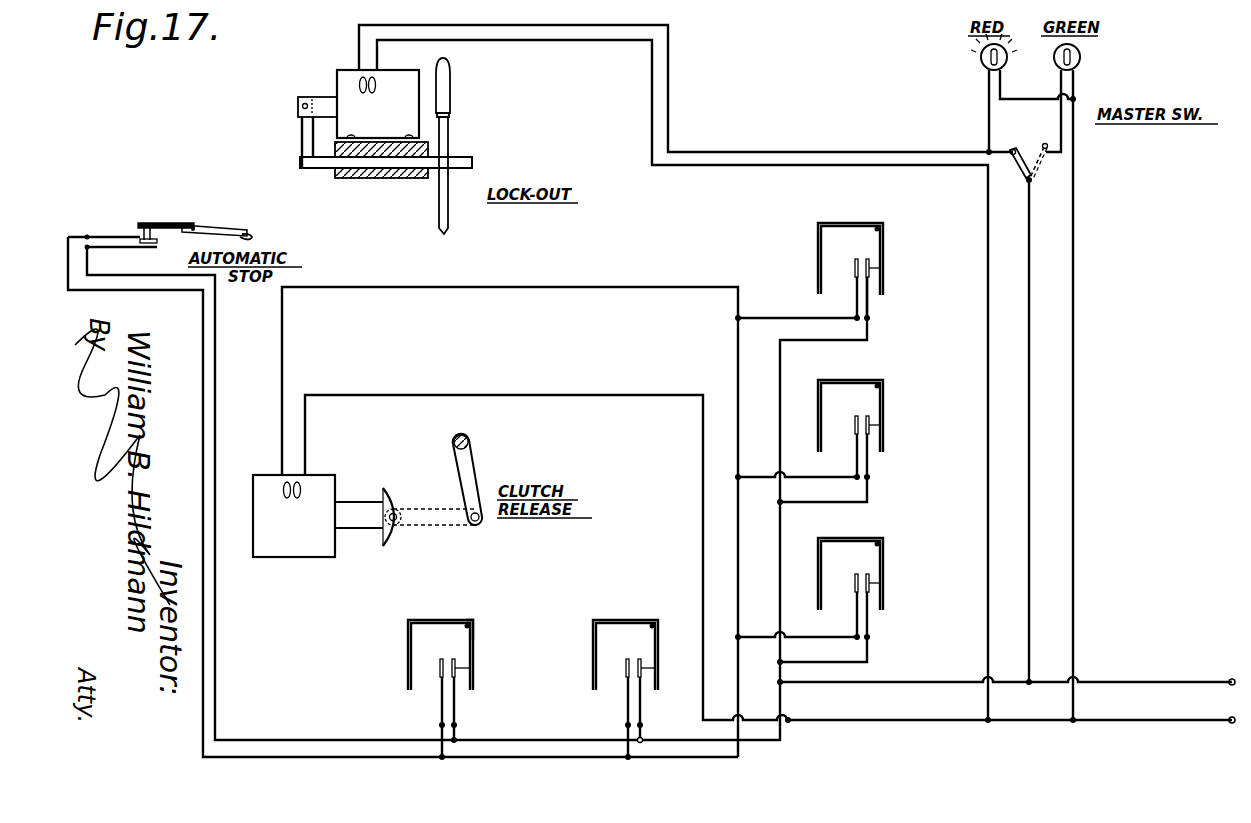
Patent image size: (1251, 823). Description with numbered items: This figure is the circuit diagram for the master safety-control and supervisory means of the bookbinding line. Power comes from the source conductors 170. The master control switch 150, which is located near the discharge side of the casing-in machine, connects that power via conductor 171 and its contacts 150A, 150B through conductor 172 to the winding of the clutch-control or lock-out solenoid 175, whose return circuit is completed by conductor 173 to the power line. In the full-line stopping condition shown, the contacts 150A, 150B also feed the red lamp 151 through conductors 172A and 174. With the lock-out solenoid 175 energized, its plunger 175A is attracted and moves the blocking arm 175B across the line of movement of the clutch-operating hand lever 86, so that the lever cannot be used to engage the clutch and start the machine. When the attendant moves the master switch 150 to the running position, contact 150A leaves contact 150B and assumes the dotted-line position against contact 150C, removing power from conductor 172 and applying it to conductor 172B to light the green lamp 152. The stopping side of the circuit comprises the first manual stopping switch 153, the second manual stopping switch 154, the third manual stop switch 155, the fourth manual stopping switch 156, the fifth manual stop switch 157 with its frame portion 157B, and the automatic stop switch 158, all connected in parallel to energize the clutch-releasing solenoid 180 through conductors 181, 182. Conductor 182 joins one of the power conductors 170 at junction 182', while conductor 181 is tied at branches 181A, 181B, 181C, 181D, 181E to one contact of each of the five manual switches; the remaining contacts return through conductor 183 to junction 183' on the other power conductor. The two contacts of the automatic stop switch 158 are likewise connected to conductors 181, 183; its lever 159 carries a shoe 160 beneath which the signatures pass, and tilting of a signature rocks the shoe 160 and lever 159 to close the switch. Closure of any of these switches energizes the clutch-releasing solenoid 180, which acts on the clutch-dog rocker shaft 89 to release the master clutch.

The clutch-operating hand lever 86 is at (452, 96).
The clutch-dog rocker shaft 89 is at (470, 442).
The master control switch 150 is at (1087, 130).
The master switch contact 150A is at (1036, 178).
The master switch contact 150B is at (1019, 148).
The master switch contact 150C is at (1053, 150).
The red lamp 151 is at (980, 58).
The green lamp 152 is at (1080, 60).
The first manual stopping switch 153 is at (866, 568).
The second manual stopping switch 154 is at (866, 410).
The third manual stop switch 155 is at (866, 254).
The fourth manual stopping switch 156 is at (641, 650).
The fifth manual stop switch 157 is at (456, 650).
The relay contactor frame 157B is at (475, 638).
The automatic stop switch 158 is at (115, 202).
The lever 159 is at (207, 230).
The shoe 160 is at (250, 240).
The source conductors 170 is at (833, 682).
The conductor 171 is at (1033, 383).
The conductor 172 is at (877, 152).
The conductor 172A is at (988, 102).
The conductor 172B is at (1045, 96).
The conductor 173 is at (665, 165).
The conductor 174 is at (1073, 240).
The lock-out solenoid 175 is at (390, 124).
The plunger 175A is at (298, 106).
The blocking arm 175B is at (458, 159).
The clutch-releasing solenoid 180 is at (312, 544).
The conductor 181 is at (548, 288).
The conductor connection 181A is at (735, 635).
The conductor connection 181B is at (735, 477).
The conductor connection 181C is at (735, 318).
The conductor connection 181D is at (627, 757).
The conductor connection 181E is at (439, 756).
The conductor 182 is at (770, 539).
The junction 182' is at (822, 735).
The conductor 183 is at (477, 493).
The junction 183' is at (853, 659).